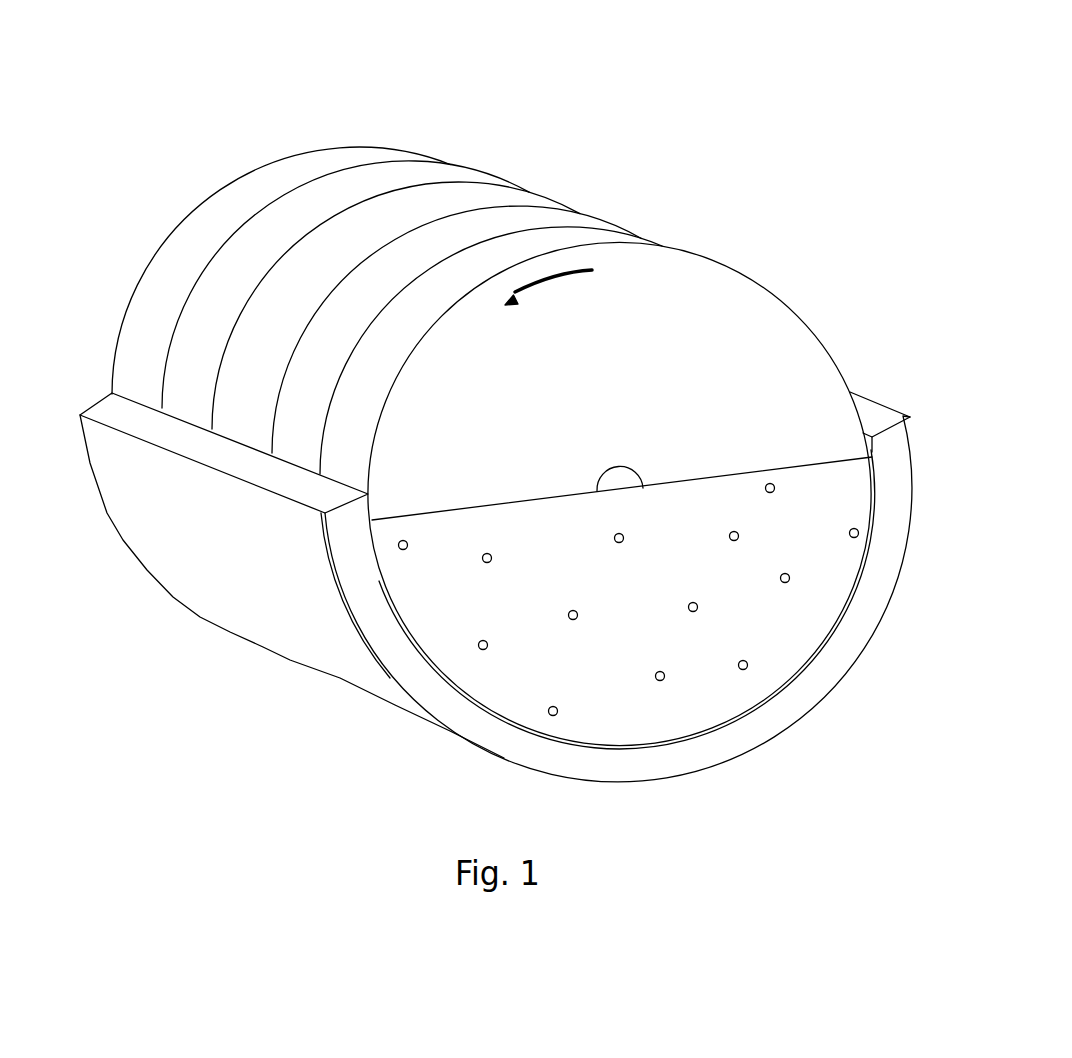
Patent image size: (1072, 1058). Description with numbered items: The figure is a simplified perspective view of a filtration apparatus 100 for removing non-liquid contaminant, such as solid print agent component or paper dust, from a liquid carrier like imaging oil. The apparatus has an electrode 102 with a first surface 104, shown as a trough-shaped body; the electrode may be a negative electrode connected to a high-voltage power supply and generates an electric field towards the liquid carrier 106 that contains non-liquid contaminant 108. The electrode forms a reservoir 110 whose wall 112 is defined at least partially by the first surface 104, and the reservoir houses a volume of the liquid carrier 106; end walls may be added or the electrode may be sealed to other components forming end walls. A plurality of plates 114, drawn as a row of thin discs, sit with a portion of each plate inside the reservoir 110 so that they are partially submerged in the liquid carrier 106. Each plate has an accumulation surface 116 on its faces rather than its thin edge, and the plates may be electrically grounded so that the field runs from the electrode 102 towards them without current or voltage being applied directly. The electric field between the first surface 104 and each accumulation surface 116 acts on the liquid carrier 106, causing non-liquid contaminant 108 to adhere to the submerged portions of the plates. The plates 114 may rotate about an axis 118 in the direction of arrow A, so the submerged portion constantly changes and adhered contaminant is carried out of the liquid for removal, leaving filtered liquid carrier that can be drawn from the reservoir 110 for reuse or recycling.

The filtration apparatus 100 is at (84, 147).
The electrode 102 is at (802, 695).
The first surface 104 is at (874, 437).
The liquid carrier 106 is at (817, 612).
The non-liquid contaminant 108 is at (401, 548).
The reservoir 110 is at (838, 452).
The wall 112 is at (366, 496).
The plurality of plates 114 is at (377, 127).
The accumulation surface 116 is at (773, 338).
The axis 118 is at (630, 467).